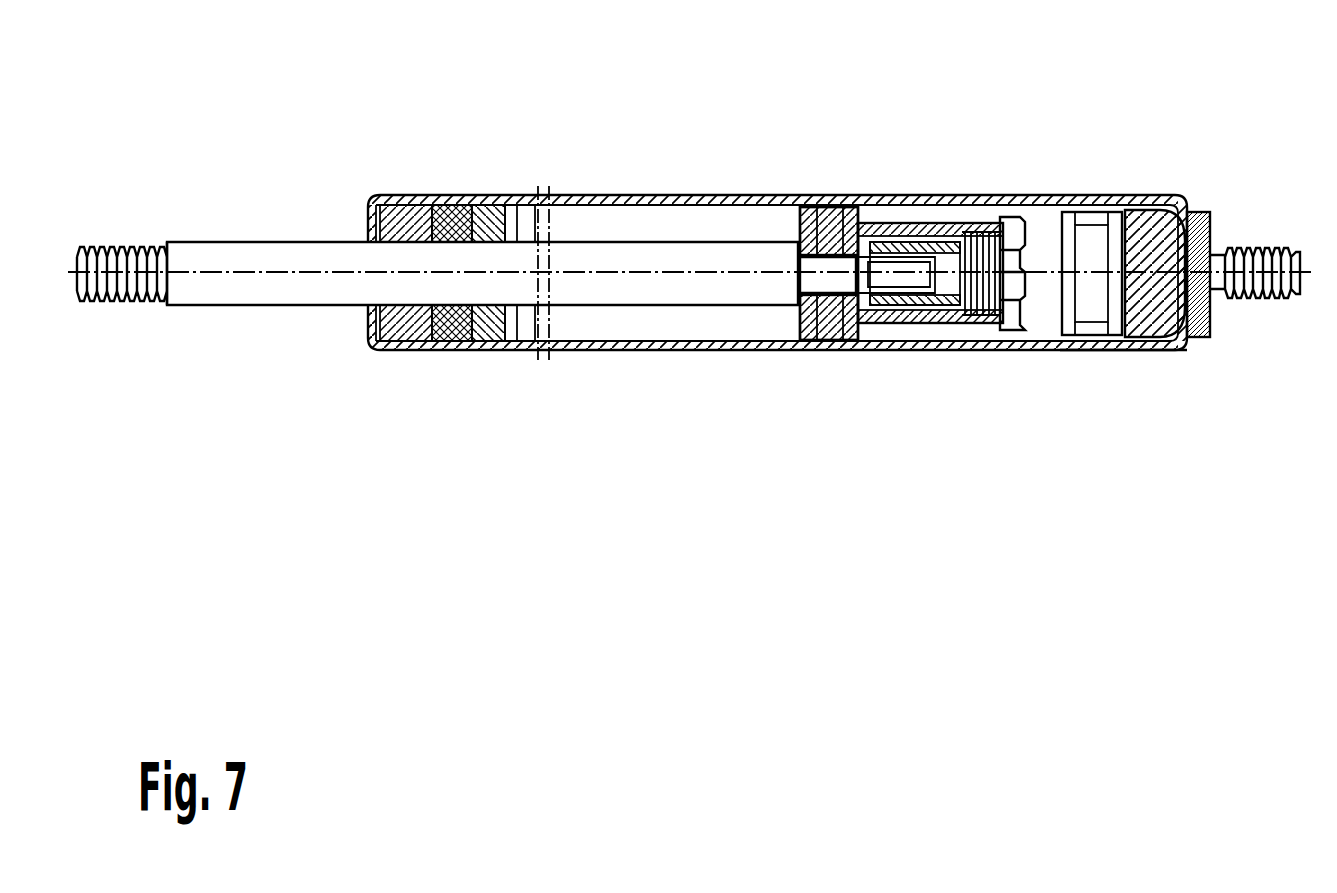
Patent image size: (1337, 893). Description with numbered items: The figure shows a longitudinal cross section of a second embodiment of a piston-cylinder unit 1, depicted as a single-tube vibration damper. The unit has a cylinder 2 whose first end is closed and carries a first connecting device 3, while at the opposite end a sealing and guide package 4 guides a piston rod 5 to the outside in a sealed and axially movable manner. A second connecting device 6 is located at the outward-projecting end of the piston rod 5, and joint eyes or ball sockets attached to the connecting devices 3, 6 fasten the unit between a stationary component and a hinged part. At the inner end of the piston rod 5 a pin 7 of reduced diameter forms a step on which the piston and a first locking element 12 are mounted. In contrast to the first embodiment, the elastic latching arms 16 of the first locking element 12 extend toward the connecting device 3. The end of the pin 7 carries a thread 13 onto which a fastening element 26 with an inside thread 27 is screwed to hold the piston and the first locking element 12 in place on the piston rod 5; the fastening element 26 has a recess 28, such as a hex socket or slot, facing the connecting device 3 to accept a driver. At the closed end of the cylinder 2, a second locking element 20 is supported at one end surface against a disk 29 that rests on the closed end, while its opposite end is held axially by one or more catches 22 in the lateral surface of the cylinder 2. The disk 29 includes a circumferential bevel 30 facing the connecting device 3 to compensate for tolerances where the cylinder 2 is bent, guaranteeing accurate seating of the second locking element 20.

The piston-cylinder unit 1 is at (970, 66).
The cylinder 2 is at (580, 193).
The first connecting device 3 is at (1268, 240).
The sealing and guide package 4 is at (435, 380).
The piston rod 5 is at (282, 265).
The second connecting device 6 is at (100, 246).
The pin 7 is at (818, 283).
The first locking element 12 is at (821, 370).
The thread 13 is at (867, 290).
The latching arms 16 is at (913, 323).
The second locking element 20 is at (1083, 200).
The catches 22 is at (1053, 348).
The fastening element 26 is at (940, 243).
The inside thread 27 is at (901, 227).
The recess 28 is at (972, 310).
The disk 29 is at (1133, 350).
The circumferential bevel 30 is at (1180, 212).